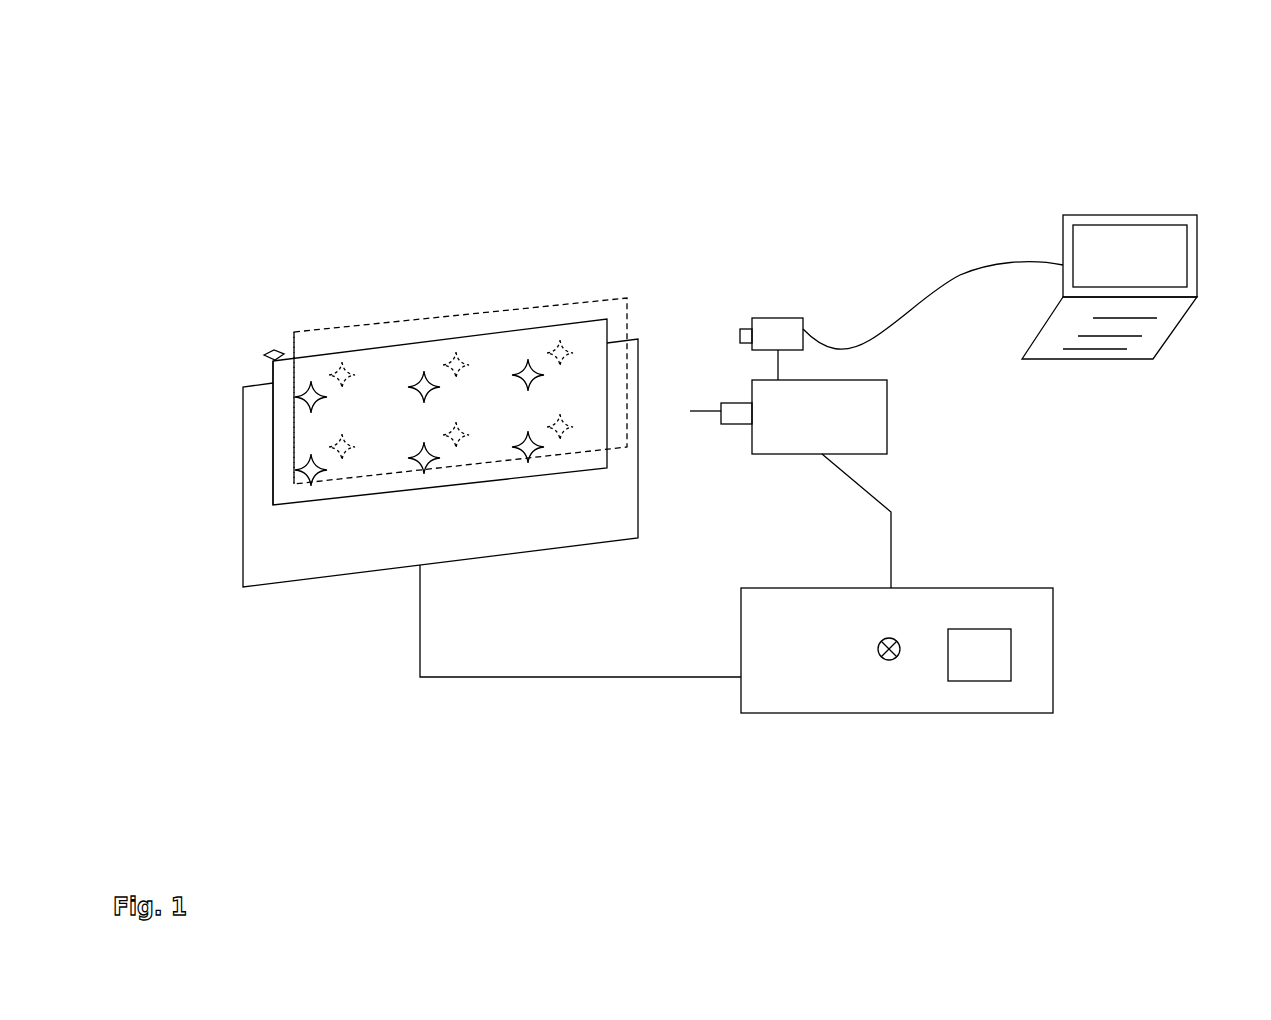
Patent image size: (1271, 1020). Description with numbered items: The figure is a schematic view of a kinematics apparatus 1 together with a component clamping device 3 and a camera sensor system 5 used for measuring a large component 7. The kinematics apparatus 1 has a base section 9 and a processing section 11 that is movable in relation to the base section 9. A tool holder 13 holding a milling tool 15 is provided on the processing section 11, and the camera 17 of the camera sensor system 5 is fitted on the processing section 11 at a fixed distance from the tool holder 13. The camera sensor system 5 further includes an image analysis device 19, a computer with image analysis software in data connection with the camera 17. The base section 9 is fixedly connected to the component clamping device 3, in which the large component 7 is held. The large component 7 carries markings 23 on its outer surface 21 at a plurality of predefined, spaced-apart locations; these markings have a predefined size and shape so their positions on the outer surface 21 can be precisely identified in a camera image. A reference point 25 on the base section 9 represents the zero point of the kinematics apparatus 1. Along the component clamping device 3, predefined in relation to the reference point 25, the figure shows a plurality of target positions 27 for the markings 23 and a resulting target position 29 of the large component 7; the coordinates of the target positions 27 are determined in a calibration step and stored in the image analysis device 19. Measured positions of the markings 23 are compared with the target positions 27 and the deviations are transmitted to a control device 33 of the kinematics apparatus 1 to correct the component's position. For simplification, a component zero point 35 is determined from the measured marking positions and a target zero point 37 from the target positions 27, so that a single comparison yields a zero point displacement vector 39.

The kinematics apparatus 1 is at (989, 515).
The component clamping device 3 is at (305, 557).
The camera sensor system 5 is at (928, 172).
The large component 7 is at (558, 322).
The base section 9 is at (814, 672).
The processing section 11 is at (845, 412).
The tool holder 13 is at (732, 413).
The milling tool 15 is at (705, 411).
The camera 17 is at (772, 330).
The image analysis device 19 is at (1114, 257).
The outer surface 21 is at (315, 433).
The markings 23 is at (424, 372).
The reference point 25 is at (885, 658).
The target positions 27 is at (455, 355).
The target position of the large component 29 is at (605, 300).
The control device 33 is at (989, 660).
The component zero point 35 is at (273, 359).
The target zero point 37 is at (296, 330).
The zero point displacement vector 39 is at (277, 332).